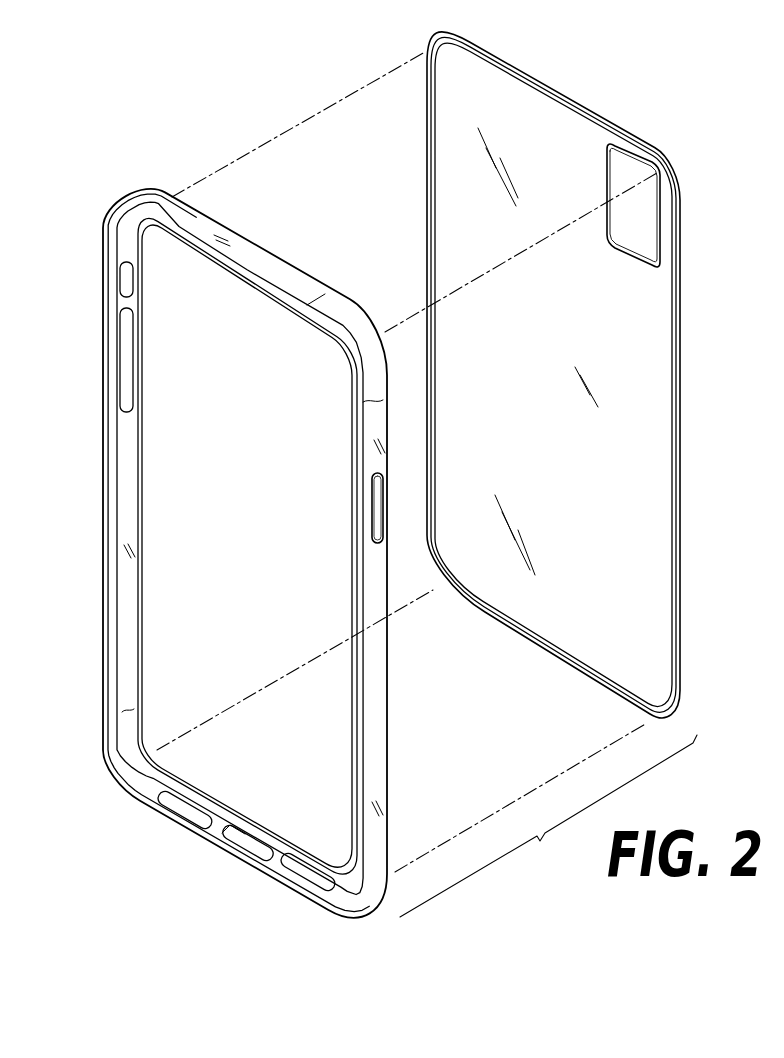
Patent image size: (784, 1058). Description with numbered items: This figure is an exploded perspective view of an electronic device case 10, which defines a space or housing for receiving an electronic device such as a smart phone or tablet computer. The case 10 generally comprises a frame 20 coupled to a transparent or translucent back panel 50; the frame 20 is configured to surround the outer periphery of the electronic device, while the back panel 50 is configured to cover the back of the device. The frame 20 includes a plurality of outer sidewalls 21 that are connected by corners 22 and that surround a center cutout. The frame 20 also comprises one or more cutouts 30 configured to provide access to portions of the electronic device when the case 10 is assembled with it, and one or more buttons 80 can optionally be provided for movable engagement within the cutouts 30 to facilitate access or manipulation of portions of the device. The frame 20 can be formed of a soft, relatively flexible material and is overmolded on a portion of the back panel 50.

The electronic device case 10 is at (548, 826).
The frame 20 is at (113, 150).
The outer sidewalls 21 is at (267, 271).
The corners 22 is at (138, 172).
The cutouts 30 is at (140, 281).
The back panel 50 is at (597, 73).
The buttons 80 is at (383, 514).